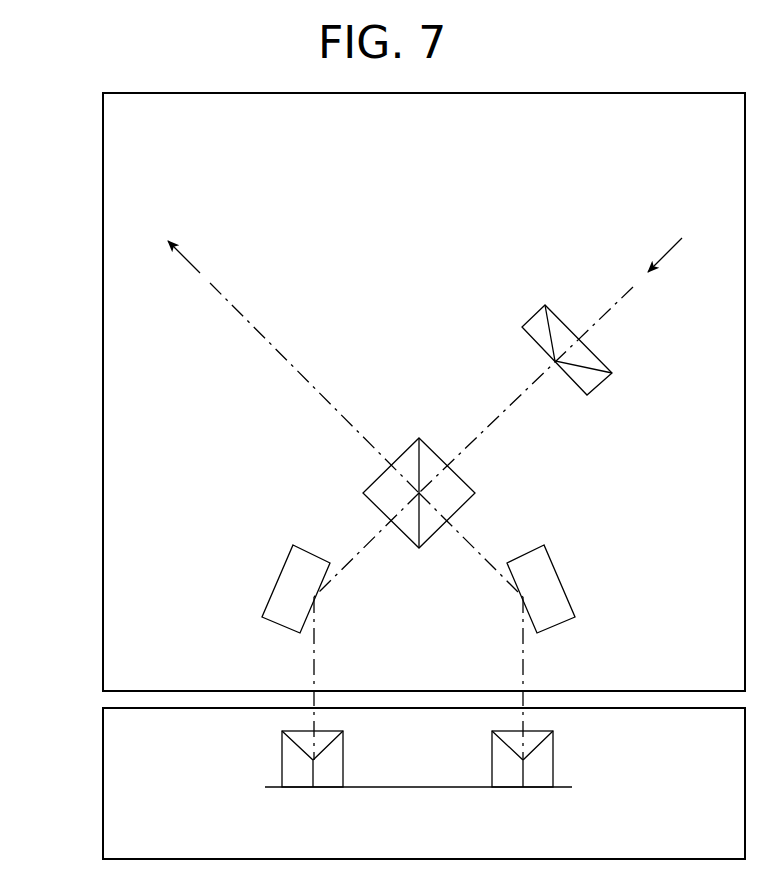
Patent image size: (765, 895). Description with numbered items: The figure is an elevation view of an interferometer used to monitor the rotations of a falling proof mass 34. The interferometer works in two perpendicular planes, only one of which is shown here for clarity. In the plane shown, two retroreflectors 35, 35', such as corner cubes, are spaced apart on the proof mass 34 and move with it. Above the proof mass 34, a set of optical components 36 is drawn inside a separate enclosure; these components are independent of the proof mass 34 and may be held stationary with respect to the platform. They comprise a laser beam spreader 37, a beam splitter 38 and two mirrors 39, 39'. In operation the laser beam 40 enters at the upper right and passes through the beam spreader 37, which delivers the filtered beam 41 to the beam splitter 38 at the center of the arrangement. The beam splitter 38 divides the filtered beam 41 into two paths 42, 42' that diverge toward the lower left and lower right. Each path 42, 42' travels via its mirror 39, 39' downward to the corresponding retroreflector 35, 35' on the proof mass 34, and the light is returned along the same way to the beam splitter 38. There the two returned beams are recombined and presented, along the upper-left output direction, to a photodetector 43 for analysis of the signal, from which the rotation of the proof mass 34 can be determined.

The proof mass 34 is at (78, 778).
The retroreflector 35 is at (315, 791).
The retroreflector 35' is at (518, 791).
The optical components 36 is at (78, 436).
The laser beam spreader 37 is at (600, 387).
The beam splitter 38 is at (462, 507).
The mirror 39 is at (268, 678).
The mirror 39' is at (573, 678).
The laser beam 40 is at (660, 256).
The filtered beam 41 is at (498, 412).
The path 42 is at (340, 568).
The path 42' is at (521, 595).
The photodetector 43 is at (180, 253).